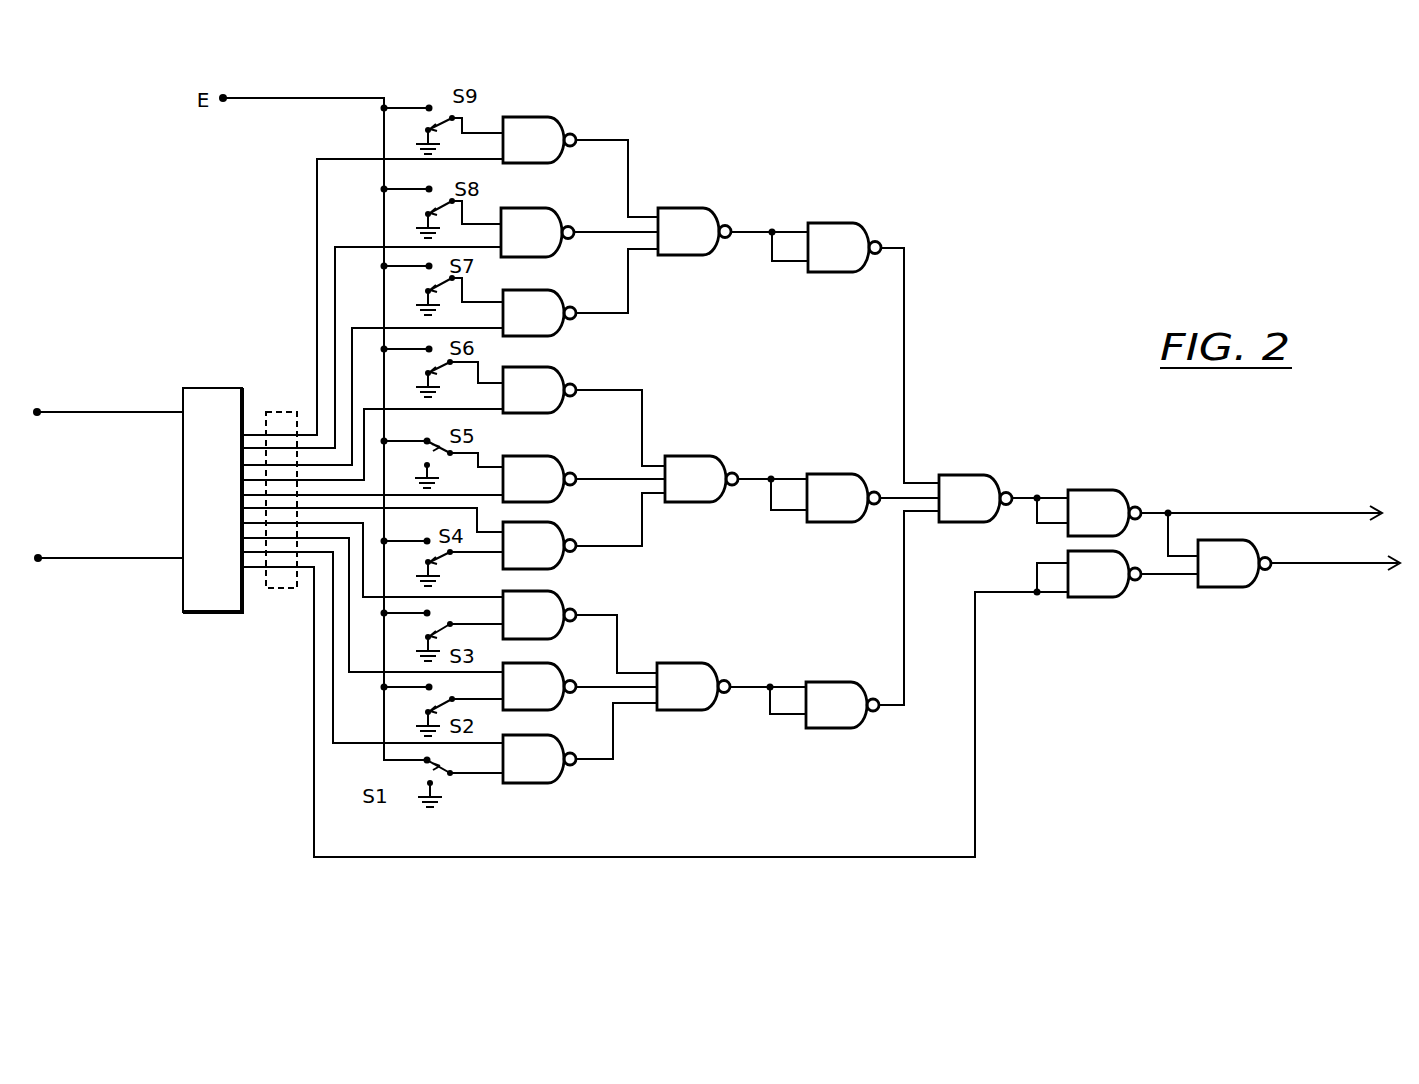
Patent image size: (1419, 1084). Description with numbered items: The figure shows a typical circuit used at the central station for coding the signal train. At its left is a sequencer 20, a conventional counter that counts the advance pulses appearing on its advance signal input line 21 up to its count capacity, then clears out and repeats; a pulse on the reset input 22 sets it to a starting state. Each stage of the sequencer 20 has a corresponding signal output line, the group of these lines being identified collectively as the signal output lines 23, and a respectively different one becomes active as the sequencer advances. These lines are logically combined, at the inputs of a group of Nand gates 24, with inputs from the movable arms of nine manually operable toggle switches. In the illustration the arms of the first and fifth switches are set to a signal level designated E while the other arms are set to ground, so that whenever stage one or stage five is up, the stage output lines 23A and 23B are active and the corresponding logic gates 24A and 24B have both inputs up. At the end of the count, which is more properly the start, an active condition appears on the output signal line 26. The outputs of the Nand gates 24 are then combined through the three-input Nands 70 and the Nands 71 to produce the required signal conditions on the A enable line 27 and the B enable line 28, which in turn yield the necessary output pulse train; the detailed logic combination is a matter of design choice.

The sequencer 20 is at (183, 475).
The advance signal input line 21 is at (120, 414).
The reset input 22 is at (126, 565).
The signal output lines 23 is at (280, 593).
The stage output line 23A is at (341, 745).
The stage output line 23B is at (317, 496).
The Nand gates 24 is at (583, 485).
The logic gate 24A is at (575, 785).
The logic gate 24B is at (576, 498).
The output signal line 26 is at (314, 806).
The A enable line 27 is at (1348, 512).
The B enable line 28 is at (1348, 565).
The Nands 70 is at (695, 257).
The Nands 71 is at (833, 273).